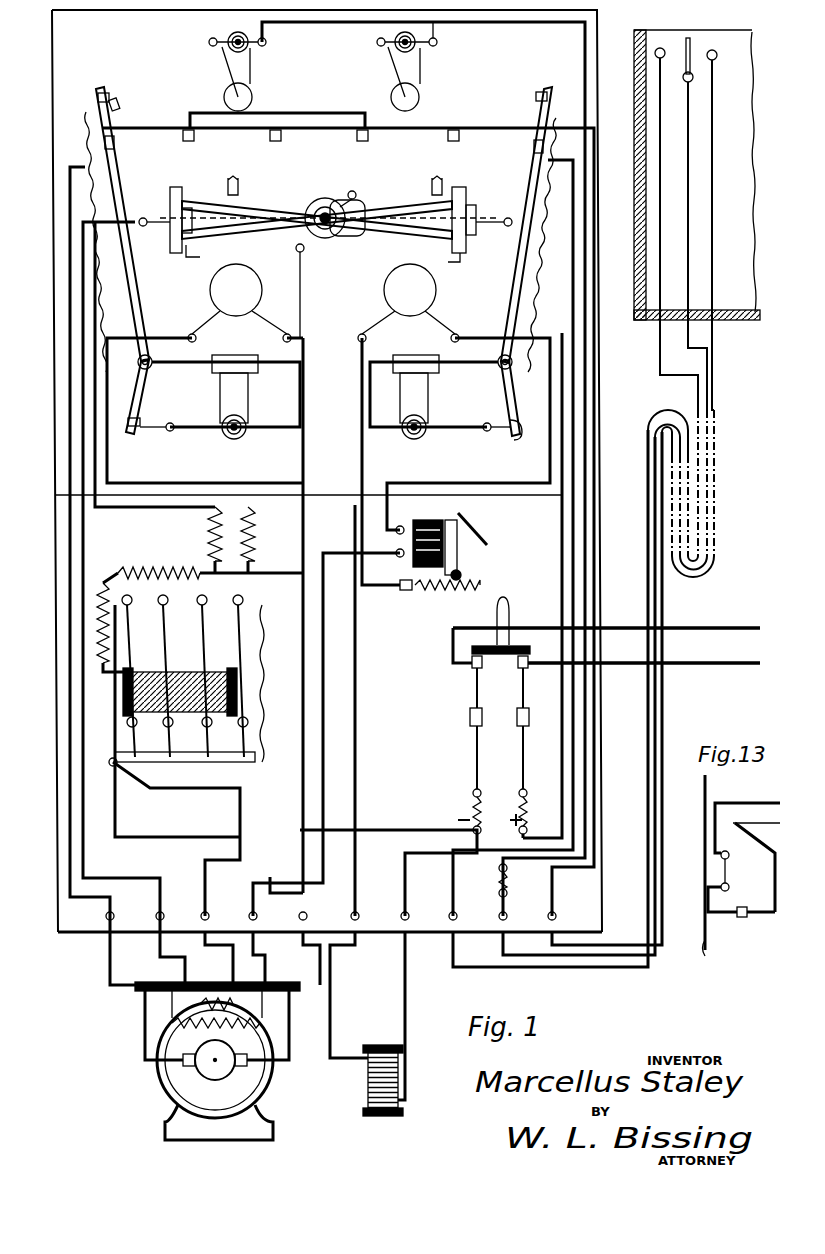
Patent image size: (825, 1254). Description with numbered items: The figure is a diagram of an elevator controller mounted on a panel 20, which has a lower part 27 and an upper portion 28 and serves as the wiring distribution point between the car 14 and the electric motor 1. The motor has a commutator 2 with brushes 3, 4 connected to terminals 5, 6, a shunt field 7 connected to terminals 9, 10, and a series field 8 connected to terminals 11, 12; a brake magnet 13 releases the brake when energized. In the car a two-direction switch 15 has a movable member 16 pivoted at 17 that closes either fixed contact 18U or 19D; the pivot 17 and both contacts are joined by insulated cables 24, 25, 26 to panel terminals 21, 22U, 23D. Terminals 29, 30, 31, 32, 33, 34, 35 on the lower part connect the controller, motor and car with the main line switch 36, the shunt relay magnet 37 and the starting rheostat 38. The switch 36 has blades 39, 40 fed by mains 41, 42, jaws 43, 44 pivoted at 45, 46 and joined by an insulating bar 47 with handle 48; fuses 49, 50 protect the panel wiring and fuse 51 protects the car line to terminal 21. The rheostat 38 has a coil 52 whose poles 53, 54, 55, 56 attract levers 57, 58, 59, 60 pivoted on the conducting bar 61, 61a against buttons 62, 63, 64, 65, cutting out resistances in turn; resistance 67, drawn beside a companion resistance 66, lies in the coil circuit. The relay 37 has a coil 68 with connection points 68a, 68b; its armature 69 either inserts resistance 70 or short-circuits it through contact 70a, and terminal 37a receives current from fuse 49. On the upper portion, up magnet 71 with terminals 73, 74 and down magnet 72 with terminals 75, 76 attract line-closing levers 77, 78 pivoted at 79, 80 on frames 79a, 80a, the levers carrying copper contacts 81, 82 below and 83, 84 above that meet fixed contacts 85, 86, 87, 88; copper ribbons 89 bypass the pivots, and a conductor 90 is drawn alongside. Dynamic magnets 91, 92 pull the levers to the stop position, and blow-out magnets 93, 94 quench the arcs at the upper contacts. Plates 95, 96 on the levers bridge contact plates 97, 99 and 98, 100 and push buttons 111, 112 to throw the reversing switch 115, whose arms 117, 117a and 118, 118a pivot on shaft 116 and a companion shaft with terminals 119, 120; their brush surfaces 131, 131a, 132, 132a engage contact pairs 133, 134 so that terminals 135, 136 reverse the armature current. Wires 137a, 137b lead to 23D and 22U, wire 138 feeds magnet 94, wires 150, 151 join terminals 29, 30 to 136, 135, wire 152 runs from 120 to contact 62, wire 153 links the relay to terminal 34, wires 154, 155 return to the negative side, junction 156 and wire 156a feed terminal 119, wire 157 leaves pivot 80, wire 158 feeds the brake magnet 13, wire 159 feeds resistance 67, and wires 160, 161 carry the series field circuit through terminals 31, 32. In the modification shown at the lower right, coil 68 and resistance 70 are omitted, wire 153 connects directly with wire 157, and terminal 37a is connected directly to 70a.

In FIG. 1, the electric motor 1 is at (185, 1085).
In FIG. 1, the commutator 2 is at (240, 1080).
In FIG. 1, the brush 3 is at (196, 1068).
In FIG. 1, the brush 4 is at (250, 1062).
In FIG. 1, the terminal 5 is at (135, 988).
In FIG. 1, the terminal 6 is at (295, 988).
In FIG. 1, the shunt field 7 is at (166, 1035).
In FIG. 1, the series field 8 is at (282, 1042).
In FIG. 1, the terminal 9 is at (172, 1016).
In FIG. 1, the terminal 10 is at (240, 1003).
In FIG. 1, the terminal 11 is at (160, 1022).
In FIG. 1, the terminal 12 is at (268, 1025).
In FIG. 1, the brake magnet 13 is at (403, 1070).
In FIG. 1, the car 14 is at (637, 320).
In FIG. 1, the two-direction switch 15 is at (700, 27).
In FIG. 1, the movable member 16 is at (691, 47).
In FIG. 1, the pivot 17 is at (690, 82).
In FIG. 1, the fixed contact 18U is at (717, 56).
In FIG. 1, the fixed contact 19D is at (655, 53).
In FIG. 1, the panel 20 is at (562, 495).
In FIG. 1, the terminal 21 is at (516, 915).
In FIG. 1, the terminal 22U is at (473, 915).
In FIG. 1, the terminal 23D is at (572, 915).
In FIG. 1, the insulated cable 24 is at (700, 475).
In FIG. 1, the insulated cable 25 is at (710, 500).
In FIG. 1, the insulated cable 26 is at (704, 540).
In FIG. 1, the lower part of panel 27 is at (599, 782).
In FIG. 1, the upper portion of panel 28 is at (598, 272).
In FIG. 1, the terminal 29 is at (94, 915).
In FIG. 1, the terminal 30 is at (146, 915).
In FIG. 1, the terminal 31 is at (192, 915).
In FIG. 1, the terminal 32 is at (240, 915).
In FIG. 1, the terminal 33 is at (289, 915).
In FIG. 1, the terminal 34 is at (341, 915).
In FIG. 1, the terminal 35 is at (391, 915).
In FIG. 1, the main line switch 36 is at (500, 690).
In FIG. 1, the relay magnet 37 is at (407, 581).
In FIG. 1, the terminal 37a is at (462, 515).
In FIG. 13, the terminal 37a is at (756, 858).
In FIG. 1, the starting rheostat 38 is at (305, 684).
In FIG. 1, the metal blade 39 is at (528, 672).
In FIG. 1, the metal blade 40 is at (472, 668).
In FIG. 1, the positive main 41 is at (698, 681).
In FIG. 1, the negative main 42 is at (697, 618).
In FIG. 1, the metallic jaw 43 is at (529, 712).
In FIG. 1, the metallic jaw 44 is at (469, 716).
In FIG. 1, the pivot 45 is at (529, 728).
In FIG. 1, the pivot 46 is at (470, 726).
In FIG. 1, the insulating bar 47 is at (520, 645).
In FIG. 1, the handle 48 is at (510, 606).
In FIG. 1, the fuse 49 is at (527, 796).
In FIG. 1, the fuse 50 is at (474, 794).
In FIG. 1, the fuse 51 is at (507, 893).
In FIG. 1, the wire coil 52 is at (125, 691).
In FIG. 1, the pole 53 is at (258, 731).
In FIG. 1, the pole 54 is at (222, 731).
In FIG. 1, the pole 55 is at (183, 731).
In FIG. 1, the pole 56 is at (147, 731).
In FIG. 1, the lever 57 is at (250, 648).
In FIG. 1, the lever 58 is at (227, 681).
In FIG. 1, the lever 59 is at (188, 681).
In FIG. 1, the lever 60 is at (150, 681).
In FIG. 1, the conducting bar 61 is at (112, 766).
In FIG. 1, the conducting bar 61a is at (250, 763).
In FIG. 1, the contact button 62 is at (243, 599).
In FIG. 1, the contact button 63 is at (206, 613).
In FIG. 1, the contact button 64 is at (167, 613).
In FIG. 1, the contact button 65 is at (118, 623).
In FIG. 1, the resistance 66 is at (255, 530).
In FIG. 1, the resistance 67 is at (210, 530).
In FIG. 1, the magnet coil 68 is at (480, 535).
In FIG. 1, the contact 68a is at (405, 518).
In FIG. 13, the contact 68a is at (729, 856).
In FIG. 1, the contact 68b is at (400, 550).
In FIG. 13, the contact 68b is at (729, 888).
In FIG. 1, the pivoted lever 69 is at (450, 590).
In FIG. 1, the resistance 70 is at (462, 592).
In FIG. 1, the contact 70a is at (403, 592).
In FIG. 13, the contact 70a is at (752, 925).
In FIG. 1, the up magnet 71 is at (239, 299).
In FIG. 1, the down magnet 72 is at (408, 299).
In FIG. 1, the terminal 73 is at (196, 338).
In FIG. 1, the terminal 74 is at (284, 339).
In FIG. 1, the terminal 75 is at (455, 339).
In FIG. 1, the terminal 76 is at (366, 338).
In FIG. 1, the line closing switch lever 77 is at (140, 308).
In FIG. 1, the line closing switch lever 78 is at (512, 300).
In FIG. 1, the pivot 79 is at (150, 368).
In FIG. 1, the frame 79a is at (248, 372).
In FIG. 1, the pivot 80 is at (503, 370).
In FIG. 1, the frame 80a is at (400, 373).
In FIG. 1, the contacting plate 81 is at (133, 438).
In FIG. 1, the contacting plate 82 is at (512, 435).
In FIG. 1, the copper contact 83 is at (98, 99).
In FIG. 1, the copper contact 84 is at (552, 92).
In FIG. 1, the fixed contact 85 is at (169, 432).
In FIG. 1, the fixed contact 86 is at (484, 431).
In FIG. 1, the fixed contact 87 is at (250, 98).
In FIG. 1, the fixed contact 88 is at (392, 98).
In FIG. 1, the copper ribbon 89 is at (548, 222).
In FIG. 1, the conductor 90 is at (562, 393).
In FIG. 1, the dynamic magnet 91 is at (224, 410).
In FIG. 1, the dynamic magnet 92 is at (420, 420).
In FIG. 1, the blow-out magnet 93 is at (266, 43).
In FIG. 1, the blow-out magnet 94 is at (377, 42).
In FIG. 1, the plate 95 is at (105, 145).
In FIG. 1, the plate 96 is at (545, 148).
In FIG. 1, the contact plate 97 is at (194, 136).
In FIG. 1, the contact plate 98 is at (368, 136).
In FIG. 1, the contact plate 99 is at (281, 136).
In FIG. 1, the contact plate 100 is at (459, 136).
In FIG. 1, the button 111 is at (238, 186).
In FIG. 1, the button 112 is at (442, 186).
In FIG. 1, the reversing switch 115 is at (318, 206).
In FIG. 1, the shaft 116 is at (332, 238).
In FIG. 1, the arm 117 is at (385, 233).
In FIG. 1, the arm 117a is at (278, 232).
In FIG. 1, the arm 118 is at (400, 212).
In FIG. 1, the arm 118a is at (300, 212).
In FIG. 1, the terminal 119 is at (356, 195).
In FIG. 1, the terminal 120 is at (298, 252).
In FIG. 1, the brush surface 131 is at (462, 260).
In FIG. 1, the brush surface 131a is at (195, 257).
In FIG. 1, the brush surface 132 is at (466, 200).
In FIG. 1, the brush surface 132a is at (176, 200).
In FIG. 1, the contacts 133 is at (176, 236).
In FIG. 1, the contacts 134 is at (466, 238).
In FIG. 1, the terminal 135 is at (152, 205).
In FIG. 1, the terminal 136 is at (508, 218).
In FIG. 1, the wire 137a is at (562, 580).
In FIG. 1, the wire 137b is at (325, 786).
In FIG. 1, the wire 138 is at (587, 418).
In FIG. 1, the wire 150 is at (70, 410).
In FIG. 1, the wire 151 is at (83, 568).
In FIG. 1, the wire 152 is at (305, 470).
In FIG. 1, the wire 153 is at (356, 727).
In FIG. 13, the wire 153 is at (718, 956).
In FIG. 1, the wire 154 is at (241, 832).
In FIG. 1, the wire 155 is at (140, 837).
In FIG. 1, the junction 156 is at (355, 376).
In FIG. 1, the wire 156a is at (344, 296).
In FIG. 1, the wire 157 is at (420, 483).
In FIG. 13, the wire 157 is at (716, 803).
In FIG. 1, the wire 158 is at (573, 455).
In FIG. 1, the wire 159 is at (95, 456).
In FIG. 1, the wire 160 is at (325, 753).
In FIG. 1, the wire 161 is at (305, 815).